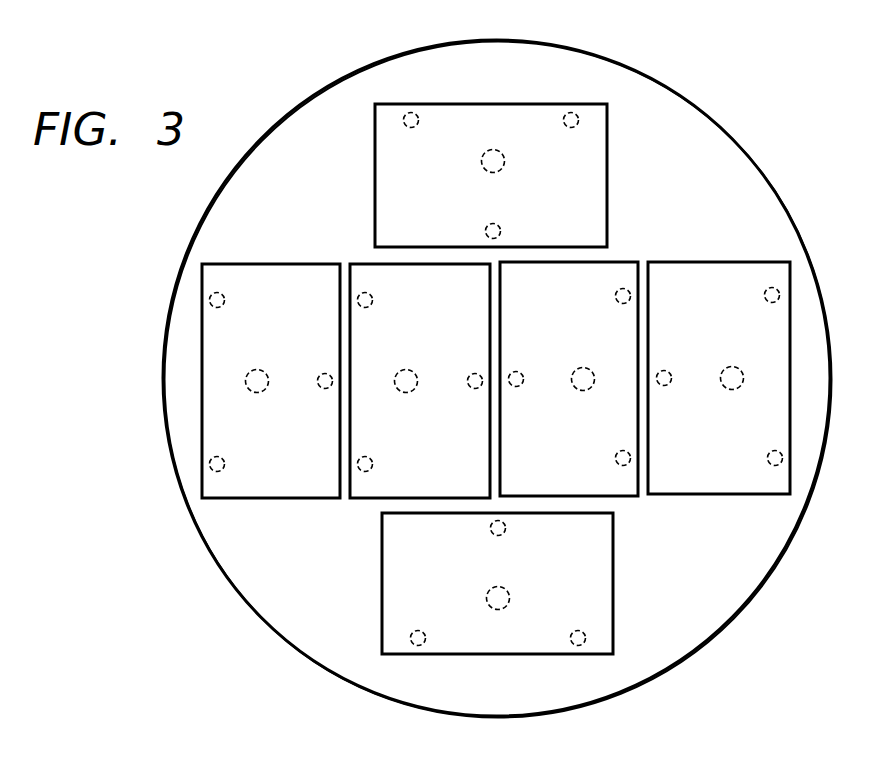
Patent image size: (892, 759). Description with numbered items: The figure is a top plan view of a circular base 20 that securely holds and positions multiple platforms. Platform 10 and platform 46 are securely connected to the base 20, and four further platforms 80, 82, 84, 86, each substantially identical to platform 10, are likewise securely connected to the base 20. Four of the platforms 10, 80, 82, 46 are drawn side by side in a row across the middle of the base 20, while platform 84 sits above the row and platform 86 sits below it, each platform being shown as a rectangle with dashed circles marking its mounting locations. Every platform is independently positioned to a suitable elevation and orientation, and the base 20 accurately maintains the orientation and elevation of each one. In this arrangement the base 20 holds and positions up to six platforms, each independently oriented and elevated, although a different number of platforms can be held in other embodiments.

The base 20 is at (717, 575).
The platform 10 is at (301, 330).
The platform 80 is at (447, 330).
The platform 82 is at (554, 325).
The platform 46 is at (707, 323).
The platform 84 is at (566, 210).
The platform 86 is at (574, 573).